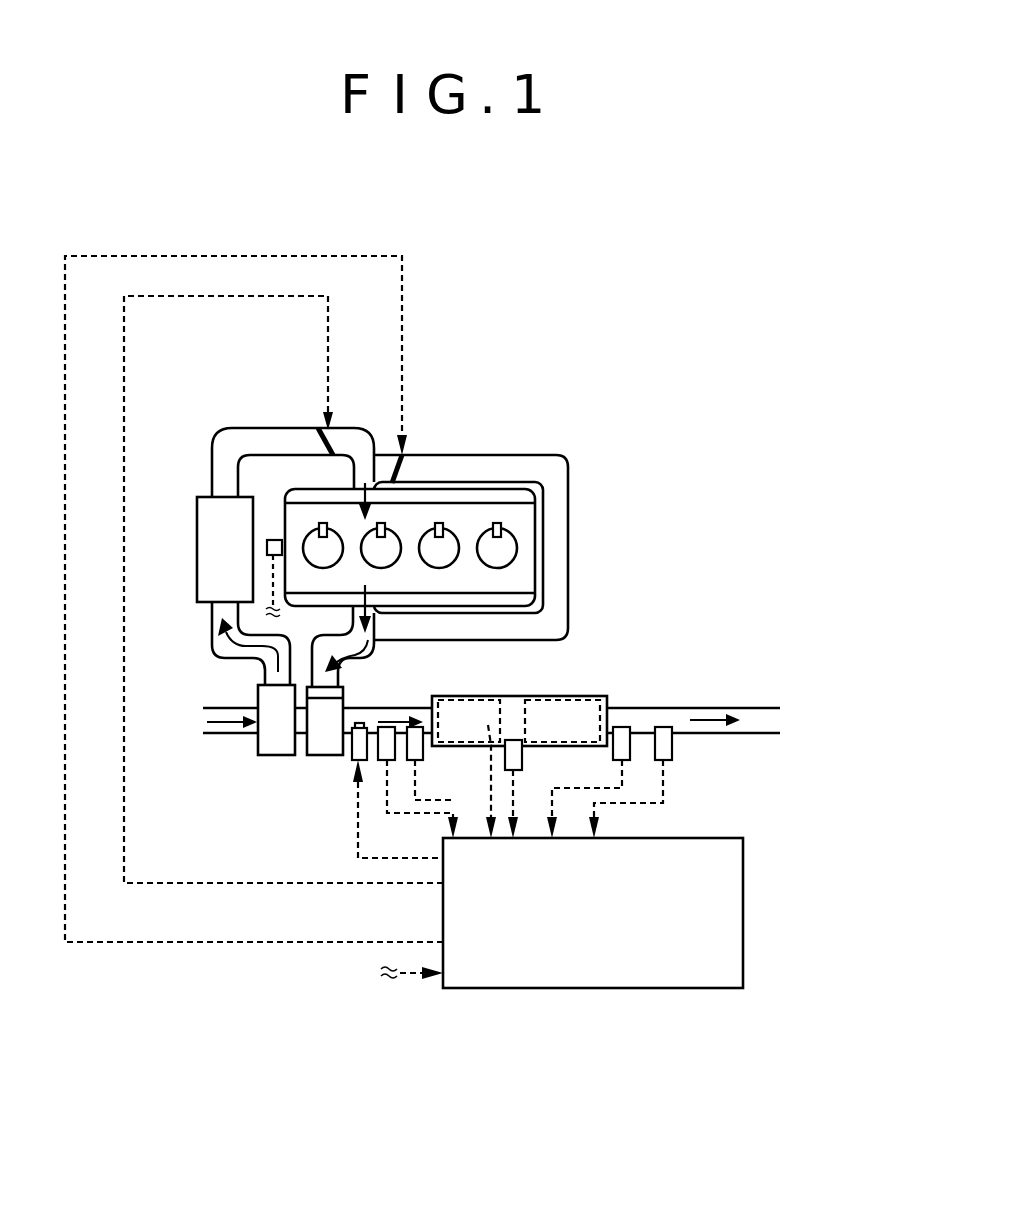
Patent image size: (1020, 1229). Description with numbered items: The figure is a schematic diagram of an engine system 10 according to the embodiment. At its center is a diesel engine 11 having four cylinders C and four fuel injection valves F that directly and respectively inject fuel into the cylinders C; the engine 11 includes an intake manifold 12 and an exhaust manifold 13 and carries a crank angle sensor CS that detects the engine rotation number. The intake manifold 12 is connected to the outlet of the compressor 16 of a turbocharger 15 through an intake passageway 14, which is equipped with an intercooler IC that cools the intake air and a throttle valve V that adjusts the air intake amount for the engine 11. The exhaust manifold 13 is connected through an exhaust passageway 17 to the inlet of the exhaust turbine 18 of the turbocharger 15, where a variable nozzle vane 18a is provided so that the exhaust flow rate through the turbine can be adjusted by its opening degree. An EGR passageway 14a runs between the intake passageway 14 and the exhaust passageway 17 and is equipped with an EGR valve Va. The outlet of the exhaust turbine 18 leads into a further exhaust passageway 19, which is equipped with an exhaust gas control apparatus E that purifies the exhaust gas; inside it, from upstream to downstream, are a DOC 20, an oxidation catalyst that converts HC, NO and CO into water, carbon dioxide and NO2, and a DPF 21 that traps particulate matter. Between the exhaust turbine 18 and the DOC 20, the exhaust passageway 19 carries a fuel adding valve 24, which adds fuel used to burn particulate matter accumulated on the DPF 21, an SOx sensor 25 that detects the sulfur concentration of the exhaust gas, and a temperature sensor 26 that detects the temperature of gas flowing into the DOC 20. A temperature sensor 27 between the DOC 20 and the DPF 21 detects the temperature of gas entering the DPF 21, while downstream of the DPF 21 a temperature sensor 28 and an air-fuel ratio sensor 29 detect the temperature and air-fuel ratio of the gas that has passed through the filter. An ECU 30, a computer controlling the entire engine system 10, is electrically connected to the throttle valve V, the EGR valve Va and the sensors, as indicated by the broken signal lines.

The engine system 10 is at (720, 368).
The diesel engine 11 is at (485, 482).
The intake manifold 12 is at (443, 497).
The exhaust manifold 13 is at (493, 606).
The intake passageway 14 is at (245, 443).
The EGR passageway 14a is at (552, 470).
The turbocharger 15 is at (290, 768).
The compressor 16 is at (268, 756).
The exhaust passageway 17 is at (372, 648).
The exhaust turbine 18 is at (320, 756).
The variable nozzle vane 18a is at (338, 690).
The exhaust passageway 19 is at (416, 699).
The DOC 20 is at (490, 781).
The DPF 21 is at (543, 697).
The fuel adding valve 24 is at (350, 760).
The SOx sensor 25 is at (378, 760).
The temperature sensor 26 is at (424, 752).
The temperature sensor 27 is at (522, 755).
The temperature sensor 28 is at (610, 753).
The air-fuel ratio sensor 29 is at (673, 757).
The ECU 30 is at (603, 975).
The intercooler IC is at (195, 540).
The crank angle sensor CS is at (273, 538).
The cylinder C is at (312, 532).
The fuel injection valve F is at (323, 525).
The throttle valve V is at (320, 428).
The EGR valve Va is at (397, 453).
The exhaust gas control apparatus E is at (605, 695).